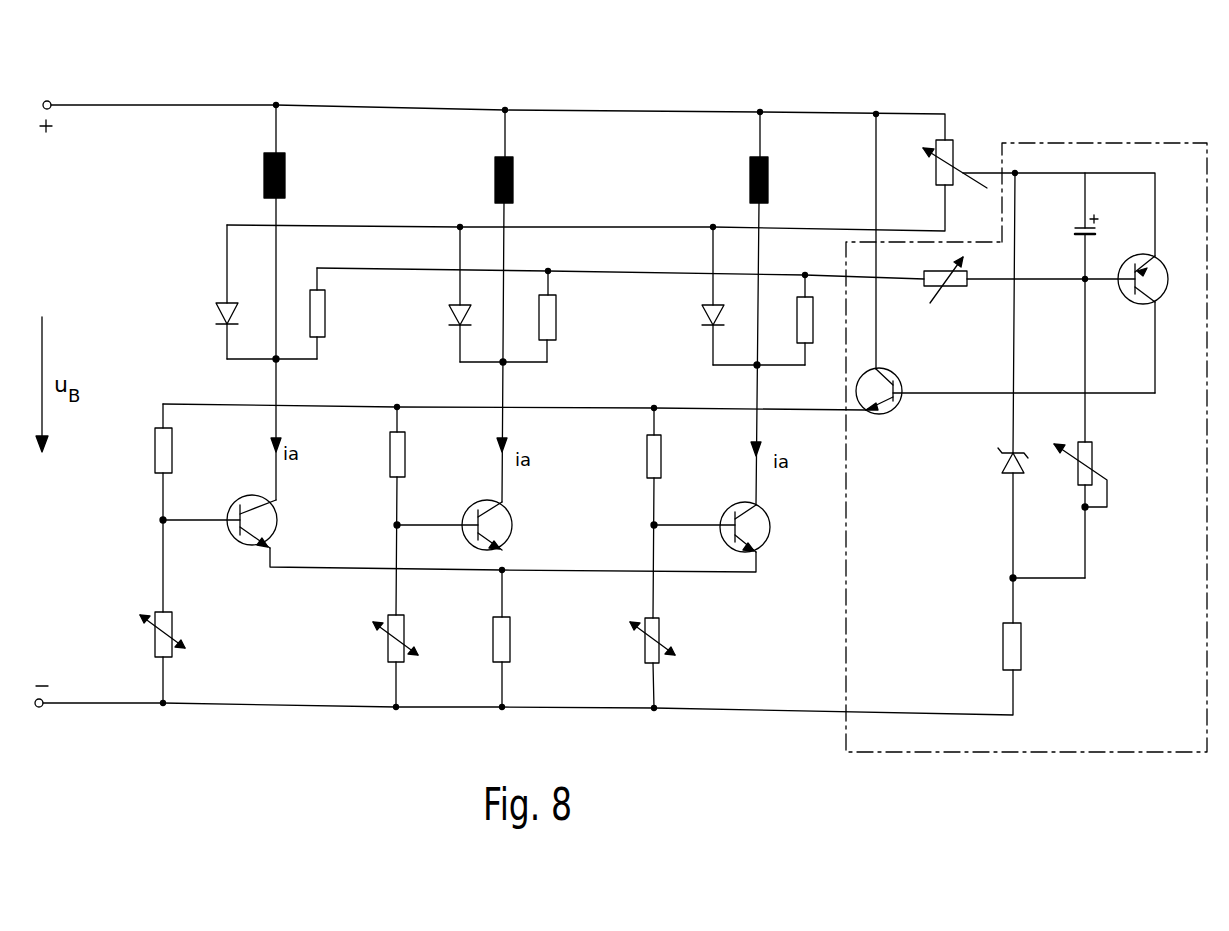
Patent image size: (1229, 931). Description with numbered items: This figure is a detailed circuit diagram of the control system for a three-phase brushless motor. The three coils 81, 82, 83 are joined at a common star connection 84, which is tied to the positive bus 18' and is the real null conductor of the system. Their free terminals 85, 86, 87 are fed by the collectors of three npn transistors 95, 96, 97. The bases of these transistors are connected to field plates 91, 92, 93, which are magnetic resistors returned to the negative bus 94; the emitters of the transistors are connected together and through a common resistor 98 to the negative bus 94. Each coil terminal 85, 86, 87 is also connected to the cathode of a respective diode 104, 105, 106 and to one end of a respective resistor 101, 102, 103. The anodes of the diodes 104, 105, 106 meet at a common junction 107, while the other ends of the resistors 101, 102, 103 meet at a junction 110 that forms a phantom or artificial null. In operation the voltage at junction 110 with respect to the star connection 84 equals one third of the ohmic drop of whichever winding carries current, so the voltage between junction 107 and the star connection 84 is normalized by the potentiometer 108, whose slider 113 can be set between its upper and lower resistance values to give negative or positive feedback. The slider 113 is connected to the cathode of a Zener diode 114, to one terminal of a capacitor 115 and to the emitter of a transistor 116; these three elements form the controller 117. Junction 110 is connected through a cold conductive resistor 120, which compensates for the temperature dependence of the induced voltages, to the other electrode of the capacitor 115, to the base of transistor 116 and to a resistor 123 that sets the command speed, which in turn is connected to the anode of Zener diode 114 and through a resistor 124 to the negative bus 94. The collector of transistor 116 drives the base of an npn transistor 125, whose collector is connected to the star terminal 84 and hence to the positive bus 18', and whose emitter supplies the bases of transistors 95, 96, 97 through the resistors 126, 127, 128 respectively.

The positive bus 18' is at (71, 122).
The star connection 84 is at (250, 104).
The coil 81 is at (286, 172).
The coil 82 is at (514, 176).
The coil 83 is at (769, 176).
The junction line 107 is at (633, 226).
The junction line 110 is at (628, 271).
The diode 104 is at (216, 310).
The diode 105 is at (452, 312).
The diode 106 is at (708, 312).
The resistor 101 is at (326, 314).
The resistor 102 is at (556, 318).
The resistor 103 is at (812, 325).
The coil terminal 85 is at (278, 362).
The coil terminal 86 is at (505, 364).
The coil terminal 87 is at (759, 367).
The resistor 126 is at (165, 455).
The resistor 127 is at (400, 455).
The resistor 128 is at (657, 462).
The npn transistor 95 is at (268, 515).
The npn transistor 96 is at (503, 522).
The npn transistor 97 is at (758, 525).
The field plate 91 is at (172, 633).
The field plate 92 is at (404, 633).
The resistor 98 is at (510, 640).
The field plate 93 is at (659, 638).
The negative bus 94 is at (250, 704).
The potentiometer 108 is at (936, 168).
The slider 113 is at (1057, 214).
The controller 117 is at (1147, 147).
The capacitor 115 is at (1075, 236).
The cold conductive resistor 120 is at (963, 285).
The transistor 116 is at (1160, 268).
The npn transistor 125 is at (888, 372).
The Zener diode 114 is at (1005, 470).
The resistor 123 is at (1092, 458).
The resistor 124 is at (1013, 652).